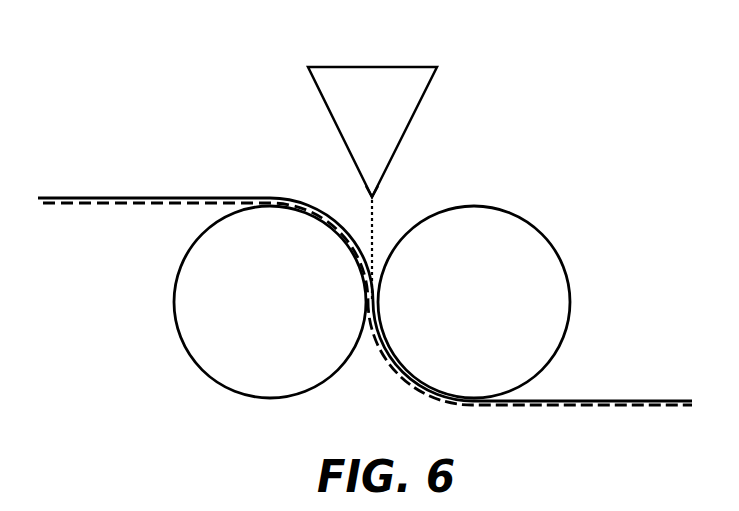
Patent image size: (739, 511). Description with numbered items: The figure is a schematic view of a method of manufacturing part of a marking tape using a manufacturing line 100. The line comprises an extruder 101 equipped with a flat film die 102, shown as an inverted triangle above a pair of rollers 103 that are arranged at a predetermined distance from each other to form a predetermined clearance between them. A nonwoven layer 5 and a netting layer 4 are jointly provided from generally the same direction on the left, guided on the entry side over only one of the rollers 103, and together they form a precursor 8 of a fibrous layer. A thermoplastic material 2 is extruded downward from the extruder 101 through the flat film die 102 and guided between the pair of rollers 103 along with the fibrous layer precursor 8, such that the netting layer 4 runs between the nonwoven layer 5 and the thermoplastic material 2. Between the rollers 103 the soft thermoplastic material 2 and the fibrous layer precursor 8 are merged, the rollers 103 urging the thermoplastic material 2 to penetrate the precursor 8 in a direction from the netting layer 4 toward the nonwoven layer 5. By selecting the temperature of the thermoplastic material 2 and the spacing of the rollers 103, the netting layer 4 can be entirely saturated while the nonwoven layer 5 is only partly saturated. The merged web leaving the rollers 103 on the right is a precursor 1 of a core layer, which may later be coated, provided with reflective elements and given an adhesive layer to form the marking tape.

The manufacturing line 100 is at (483, 66).
The extruder 101 is at (412, 125).
The flat film die 102 is at (368, 205).
The thermoplastic material 2 is at (375, 223).
The rollers 103 is at (557, 243).
The precursor of a fibrous layer 8 is at (71, 194).
The nonwoven layer 5 is at (147, 198).
The netting layer 4 is at (128, 205).
The precursor of a core layer 1 is at (643, 397).